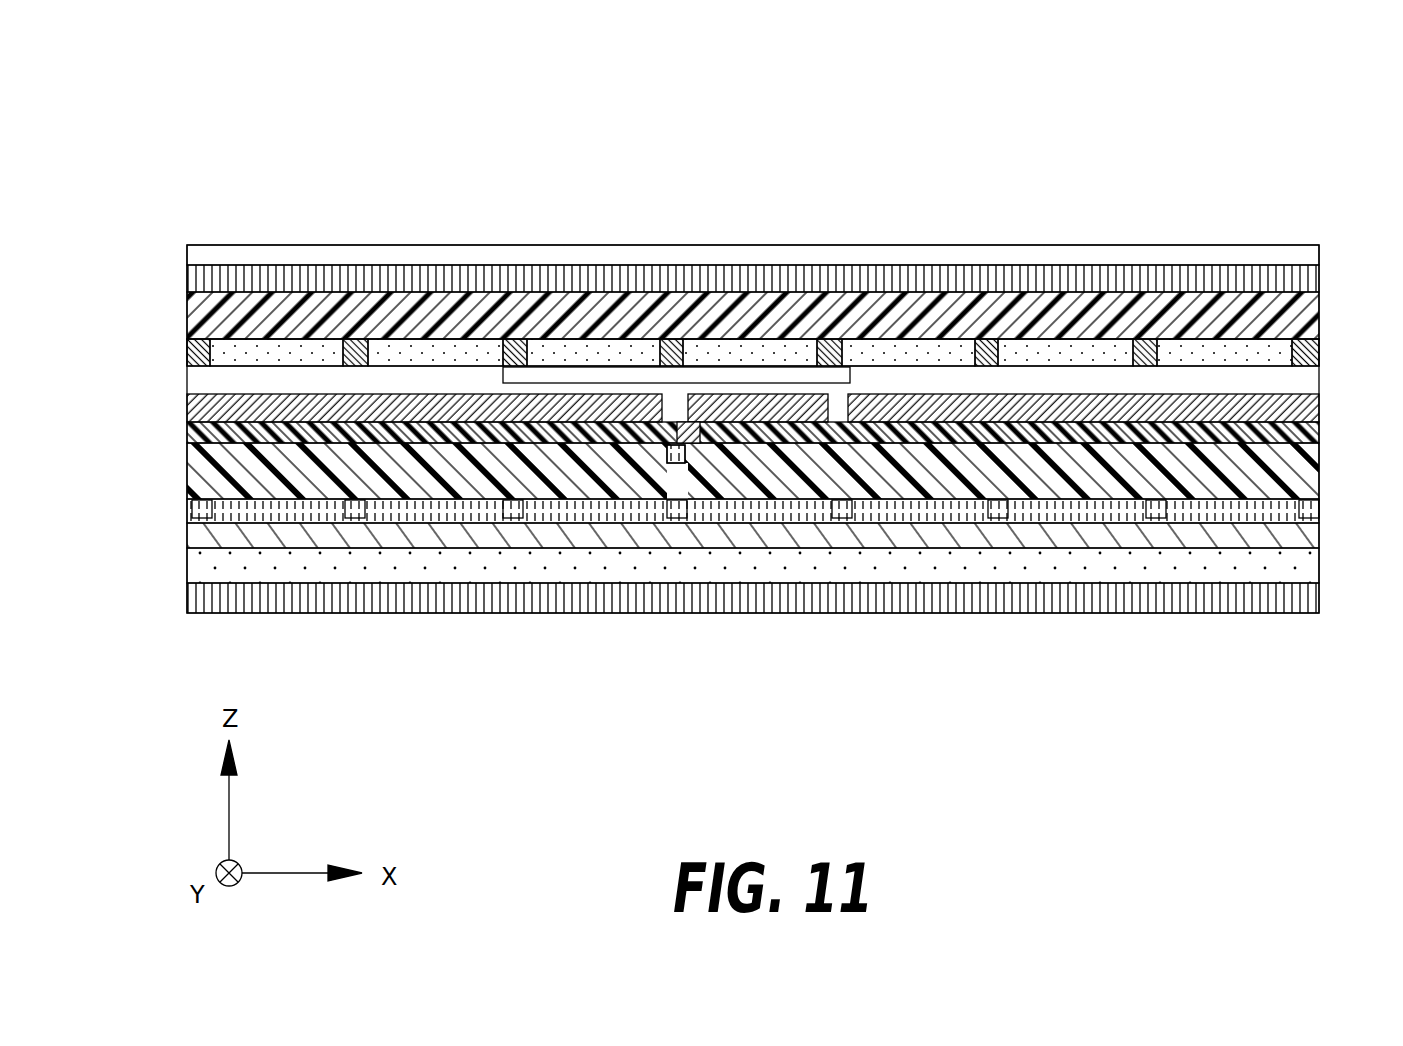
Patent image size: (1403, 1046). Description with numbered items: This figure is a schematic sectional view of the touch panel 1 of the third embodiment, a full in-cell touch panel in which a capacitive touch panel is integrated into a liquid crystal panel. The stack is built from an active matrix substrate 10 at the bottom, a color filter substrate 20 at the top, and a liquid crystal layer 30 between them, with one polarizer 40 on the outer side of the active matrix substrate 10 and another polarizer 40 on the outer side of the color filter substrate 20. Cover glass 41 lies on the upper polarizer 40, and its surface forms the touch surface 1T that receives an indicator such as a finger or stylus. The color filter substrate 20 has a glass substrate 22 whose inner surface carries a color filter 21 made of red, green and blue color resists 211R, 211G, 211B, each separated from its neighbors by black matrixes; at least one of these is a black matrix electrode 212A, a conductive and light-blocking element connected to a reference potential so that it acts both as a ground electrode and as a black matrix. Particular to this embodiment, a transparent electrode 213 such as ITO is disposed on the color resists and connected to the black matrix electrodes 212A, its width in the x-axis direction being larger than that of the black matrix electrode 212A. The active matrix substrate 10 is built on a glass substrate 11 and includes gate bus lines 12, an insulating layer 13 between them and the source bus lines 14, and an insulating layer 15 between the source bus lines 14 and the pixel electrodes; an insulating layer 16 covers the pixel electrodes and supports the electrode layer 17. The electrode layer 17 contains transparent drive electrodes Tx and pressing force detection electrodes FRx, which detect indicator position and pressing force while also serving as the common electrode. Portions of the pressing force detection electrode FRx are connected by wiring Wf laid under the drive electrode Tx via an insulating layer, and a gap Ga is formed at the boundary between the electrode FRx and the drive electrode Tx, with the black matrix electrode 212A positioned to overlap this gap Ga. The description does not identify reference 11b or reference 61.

The touch panel 1 is at (1248, 86).
The active matrix substrate 10 is at (750, 572).
The glass substrate 11 is at (187, 563).
The insulating layer 11b is at (753, 473).
The gate bus line 12 is at (187, 535).
The insulating layer 13 is at (187, 510).
The source bus line 14 is at (363, 512).
The insulating layer 15 is at (187, 472).
The insulating layer 16 is at (187, 432).
The electrode layer 17 is at (187, 418).
The color filter substrate 20 is at (750, 218).
The color filter 21 is at (753, 218).
The color resist 211B is at (290, 340).
The color resist 211R is at (440, 340).
The color resist 211G is at (590, 340).
The black matrix electrode 212A is at (677, 403).
The transparent electrode 213 is at (590, 380).
The glass substrate 22 is at (187, 322).
The liquid crystal layer 30 is at (936, 558).
The polarizer 40 is at (187, 278).
The cover glass 41 is at (187, 258).
The contact hole 61 is at (692, 445).
The drive electrode Tx is at (305, 392).
The pressing force detection electrode FRx is at (732, 394).
The gap Ga is at (681, 378).
The wiring Wf is at (667, 467).
The touch surface 1T is at (481, 246).